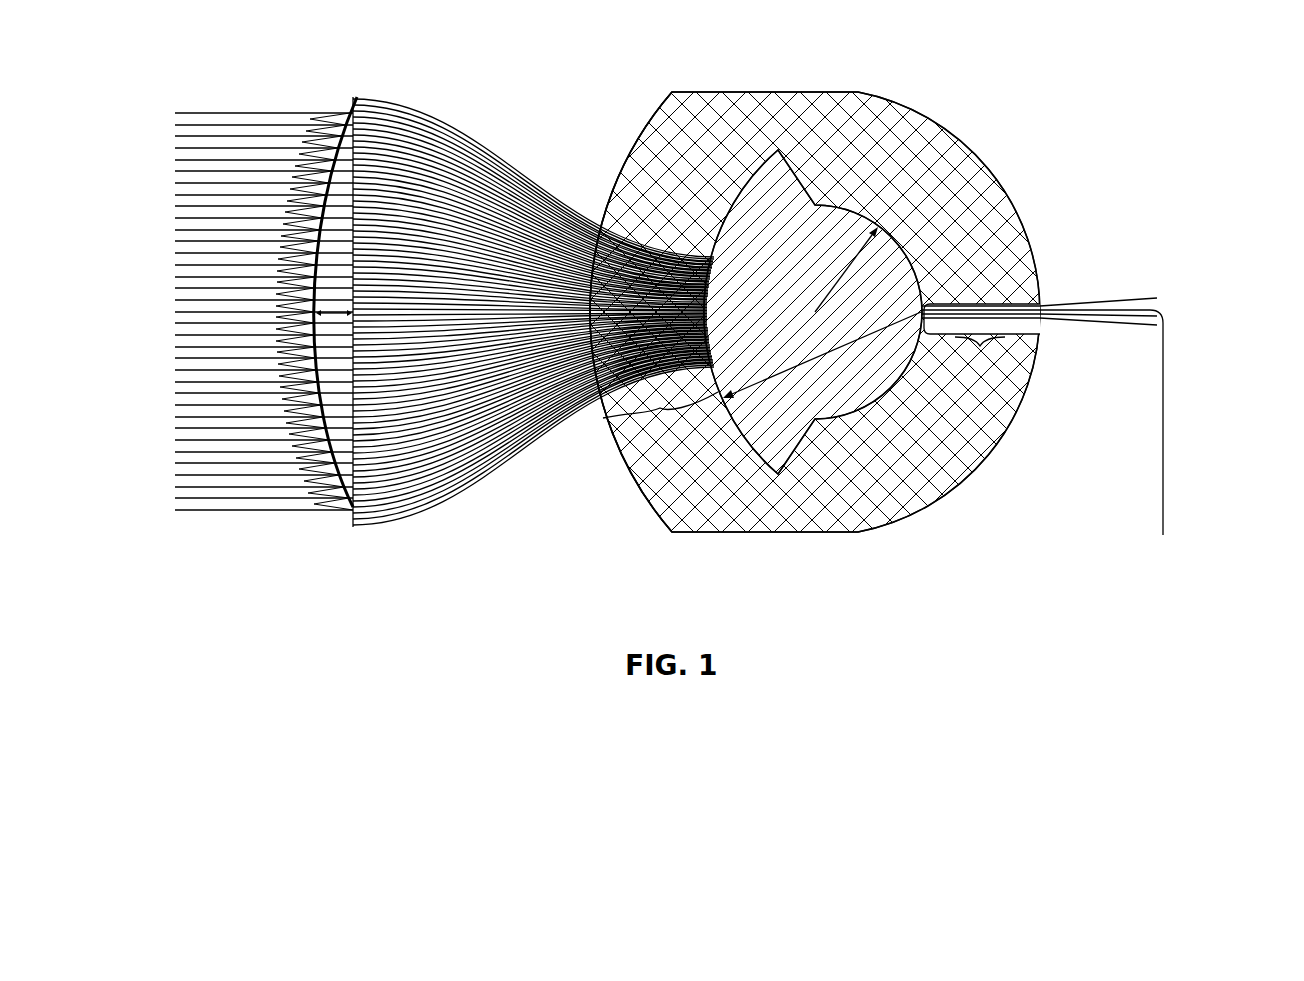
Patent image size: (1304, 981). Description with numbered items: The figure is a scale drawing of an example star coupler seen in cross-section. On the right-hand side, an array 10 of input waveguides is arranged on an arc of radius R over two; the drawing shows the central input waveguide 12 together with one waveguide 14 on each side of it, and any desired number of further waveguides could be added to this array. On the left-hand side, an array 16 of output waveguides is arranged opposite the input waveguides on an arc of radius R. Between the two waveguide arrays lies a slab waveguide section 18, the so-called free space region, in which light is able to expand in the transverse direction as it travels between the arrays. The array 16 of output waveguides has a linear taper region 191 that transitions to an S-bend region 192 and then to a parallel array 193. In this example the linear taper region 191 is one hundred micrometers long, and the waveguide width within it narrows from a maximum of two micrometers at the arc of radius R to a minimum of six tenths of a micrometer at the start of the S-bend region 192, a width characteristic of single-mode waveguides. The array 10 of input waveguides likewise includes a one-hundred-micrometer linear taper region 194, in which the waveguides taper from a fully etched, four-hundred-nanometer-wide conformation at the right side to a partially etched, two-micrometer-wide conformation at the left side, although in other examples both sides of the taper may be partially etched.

The array of input waveguides 10 is at (1073, 246).
The central input waveguide 12 is at (1165, 334).
The waveguide 14 is at (1128, 297).
The array of output waveguides 16 is at (452, 106).
The slab waveguide section 18 is at (733, 198).
The linear taper region 191 is at (603, 395).
The S-bend region 192 is at (483, 333).
The parallel array 193 is at (240, 402).
The linear taper region 194 is at (988, 287).